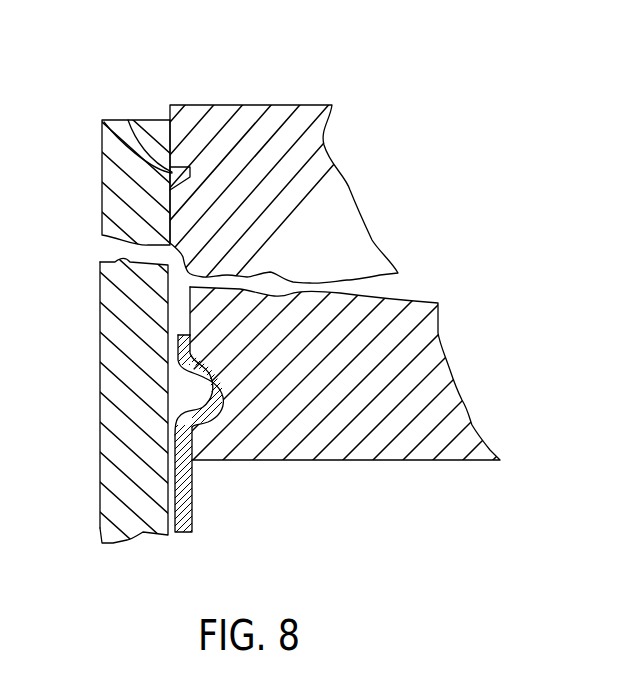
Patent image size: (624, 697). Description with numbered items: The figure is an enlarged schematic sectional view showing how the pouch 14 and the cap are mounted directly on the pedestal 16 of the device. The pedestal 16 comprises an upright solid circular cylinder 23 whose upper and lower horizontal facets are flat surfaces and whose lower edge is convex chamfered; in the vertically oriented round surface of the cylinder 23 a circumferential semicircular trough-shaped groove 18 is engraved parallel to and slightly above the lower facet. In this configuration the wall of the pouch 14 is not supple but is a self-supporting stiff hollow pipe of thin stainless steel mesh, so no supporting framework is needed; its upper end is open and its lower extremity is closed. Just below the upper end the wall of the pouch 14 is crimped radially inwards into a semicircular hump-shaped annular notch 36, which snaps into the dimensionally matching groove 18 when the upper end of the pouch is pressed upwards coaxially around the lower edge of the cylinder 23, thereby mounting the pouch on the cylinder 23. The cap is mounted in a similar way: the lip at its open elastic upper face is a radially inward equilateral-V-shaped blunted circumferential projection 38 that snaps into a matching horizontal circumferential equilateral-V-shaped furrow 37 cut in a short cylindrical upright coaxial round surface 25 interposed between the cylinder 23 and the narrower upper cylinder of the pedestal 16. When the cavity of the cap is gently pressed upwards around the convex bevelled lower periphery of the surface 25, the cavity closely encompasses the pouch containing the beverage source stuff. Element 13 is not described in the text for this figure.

The first wall member 13 is at (100, 464).
The pouch 14 is at (190, 493).
The pedestal 16 is at (297, 106).
The groove 18 is at (100, 313).
The cylinder 23 is at (418, 315).
The round surface 25 is at (130, 185).
The notch 36 is at (203, 382).
The furrow 37 is at (145, 150).
The projection 38 is at (108, 117).